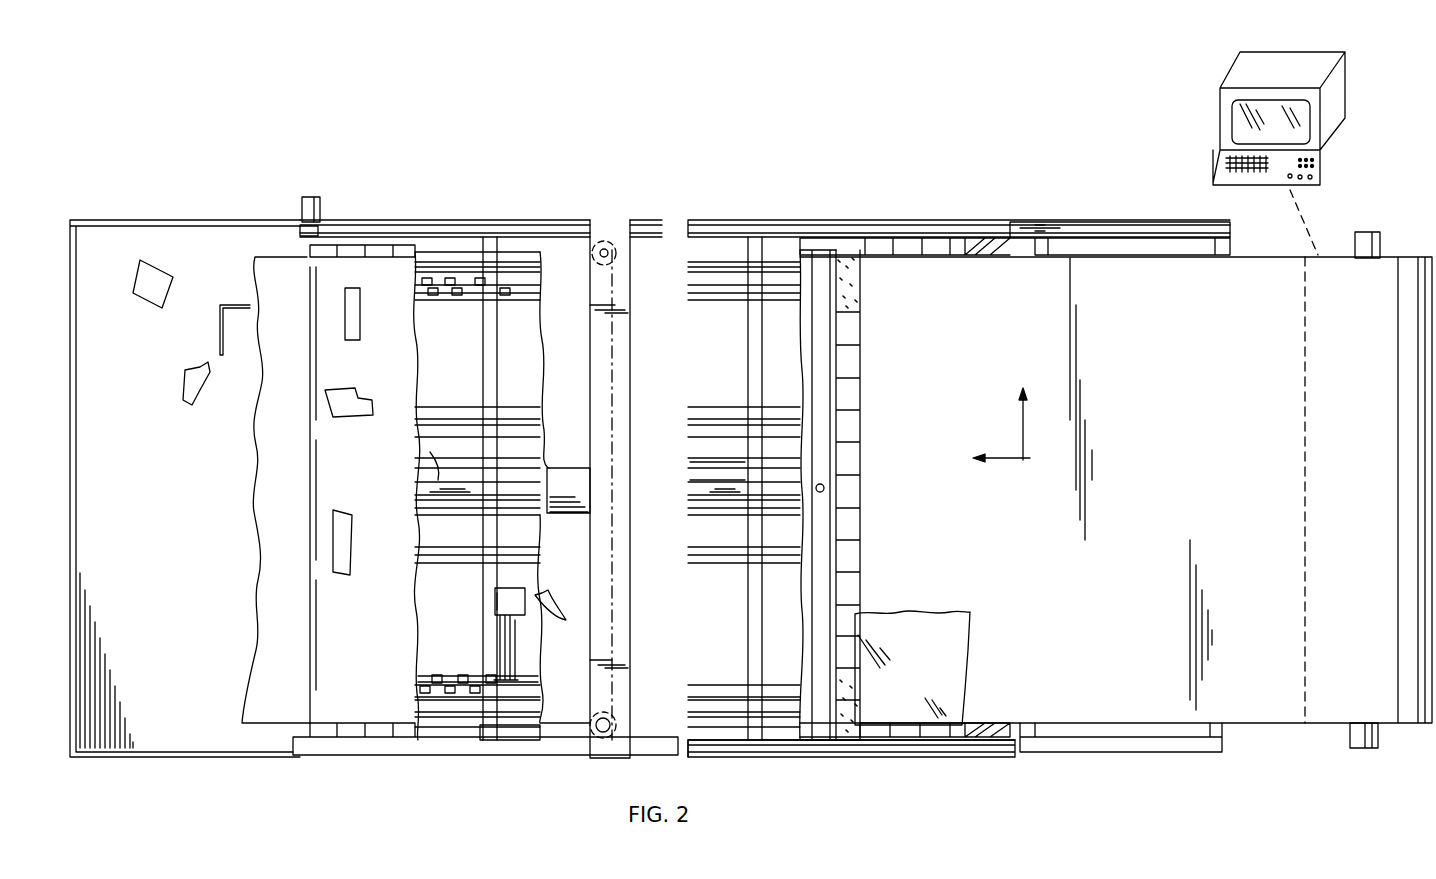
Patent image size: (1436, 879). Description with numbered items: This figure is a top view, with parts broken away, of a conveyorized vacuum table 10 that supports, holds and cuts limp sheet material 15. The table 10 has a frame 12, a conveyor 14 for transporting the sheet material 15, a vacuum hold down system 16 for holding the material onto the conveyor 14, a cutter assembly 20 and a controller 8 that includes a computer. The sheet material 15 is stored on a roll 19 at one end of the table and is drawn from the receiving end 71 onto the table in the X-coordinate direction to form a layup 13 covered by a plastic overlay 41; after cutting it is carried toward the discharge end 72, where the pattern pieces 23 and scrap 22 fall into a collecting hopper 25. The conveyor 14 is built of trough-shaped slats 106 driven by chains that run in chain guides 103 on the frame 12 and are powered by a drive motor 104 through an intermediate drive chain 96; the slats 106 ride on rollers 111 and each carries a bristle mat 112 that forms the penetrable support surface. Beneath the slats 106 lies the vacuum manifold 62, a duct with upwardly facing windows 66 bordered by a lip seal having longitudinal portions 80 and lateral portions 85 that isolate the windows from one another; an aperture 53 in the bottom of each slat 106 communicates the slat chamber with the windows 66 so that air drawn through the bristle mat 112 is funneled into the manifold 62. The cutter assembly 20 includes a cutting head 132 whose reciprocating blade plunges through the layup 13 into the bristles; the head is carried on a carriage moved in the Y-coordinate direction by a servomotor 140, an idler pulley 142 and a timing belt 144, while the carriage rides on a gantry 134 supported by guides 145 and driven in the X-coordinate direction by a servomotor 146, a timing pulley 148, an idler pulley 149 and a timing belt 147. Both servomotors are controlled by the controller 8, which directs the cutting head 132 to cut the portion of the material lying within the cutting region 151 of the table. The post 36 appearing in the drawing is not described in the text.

The controller 8 is at (1220, 114).
The conveyorized vacuum table 10 is at (995, 200).
The frame 12 is at (1066, 752).
The layup 13 is at (252, 498).
The conveyor 14 is at (849, 740).
The sheet material 15 is at (1256, 288).
The vacuum hold down system 16 is at (685, 532).
The roll 19 is at (1398, 723).
The cutter assembly 20 is at (575, 465).
The scrap 22 is at (218, 318).
The pattern pieces 23 is at (160, 262).
The collecting hopper 25 is at (234, 240).
The support post 36 is at (483, 360).
The plastic overlay 41 is at (928, 682).
The aperture 53 is at (824, 486).
The vacuum manifold 62 is at (716, 472).
The window openings 66 is at (475, 487).
The receiving end 71 is at (920, 740).
The discharge end 72 is at (318, 737).
The longitudinal portions 80 is at (438, 480).
The lateral portions 85 is at (525, 490).
The intermediate drive chain 96 is at (418, 654).
The chain guides 103 is at (462, 740).
The drive motor 104 is at (508, 595).
The slats 106 is at (822, 252).
The rollers 111 is at (457, 292).
The bristle mat 112 is at (850, 305).
The cutting head 132 is at (562, 518).
The gantry 134 is at (612, 630).
The servomotor 140 is at (594, 728).
The idler pulley 142 is at (606, 242).
The timing belt 144 is at (622, 345).
The guides 145 is at (565, 222).
The servomotor 146 is at (320, 205).
The timing belt 147 is at (952, 237).
The timing pulley 148 is at (300, 232).
The idler pulley 149 is at (1046, 234).
The cutting region 151 is at (756, 212).